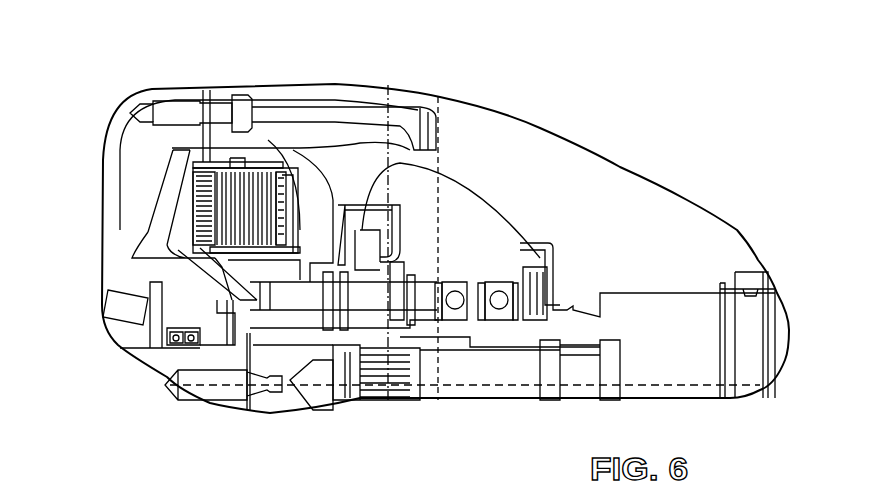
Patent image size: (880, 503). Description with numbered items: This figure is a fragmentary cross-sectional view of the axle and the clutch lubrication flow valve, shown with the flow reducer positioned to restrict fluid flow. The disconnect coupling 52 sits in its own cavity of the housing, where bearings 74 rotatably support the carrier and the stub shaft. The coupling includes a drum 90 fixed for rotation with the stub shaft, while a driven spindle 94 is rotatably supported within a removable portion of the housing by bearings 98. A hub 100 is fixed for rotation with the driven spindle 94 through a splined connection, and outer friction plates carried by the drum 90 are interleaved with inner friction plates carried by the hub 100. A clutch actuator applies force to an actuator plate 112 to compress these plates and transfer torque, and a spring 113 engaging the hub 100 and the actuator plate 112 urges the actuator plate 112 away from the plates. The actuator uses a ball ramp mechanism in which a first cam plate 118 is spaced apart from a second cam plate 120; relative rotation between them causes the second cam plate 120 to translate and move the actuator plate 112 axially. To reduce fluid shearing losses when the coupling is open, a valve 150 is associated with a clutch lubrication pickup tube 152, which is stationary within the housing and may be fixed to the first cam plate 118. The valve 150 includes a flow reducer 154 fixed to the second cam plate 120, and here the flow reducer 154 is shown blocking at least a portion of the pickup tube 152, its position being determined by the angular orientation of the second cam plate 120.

The disconnect coupling 52 is at (225, 148).
The bearings 74 is at (125, 305).
The drum 90 is at (172, 152).
The driven spindle 94 is at (466, 335).
The bearings 98 is at (462, 292).
The hub 100 is at (215, 258).
The actuator plate 112 is at (312, 207).
The spring 113 is at (268, 283).
The first cam plate 118 is at (398, 290).
The second cam plate 120 is at (367, 303).
The valve 150 is at (398, 207).
The clutch lubrication pickup tube 152 is at (400, 233).
The flow reducer 154 is at (432, 152).